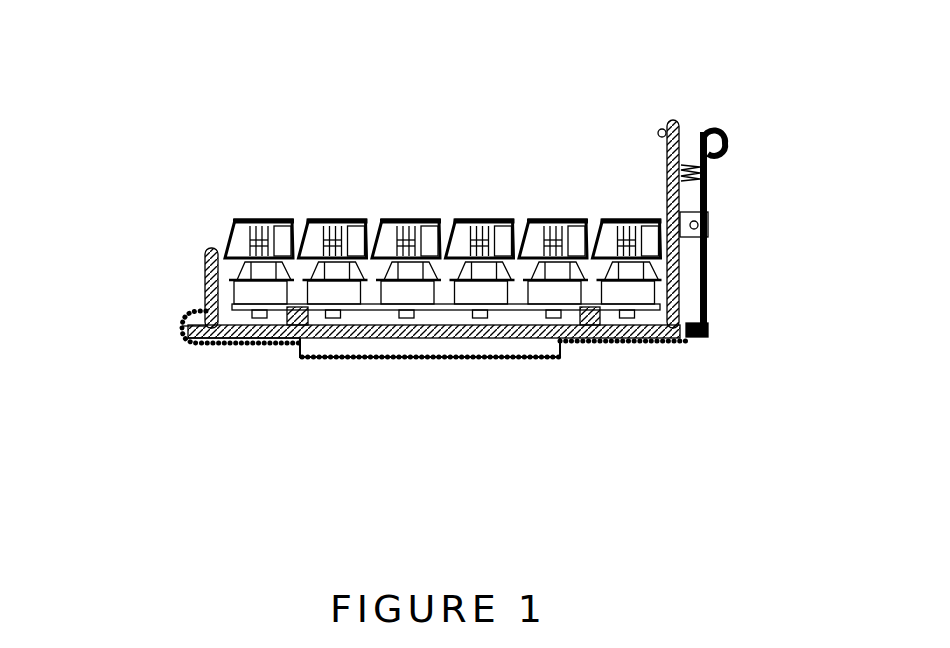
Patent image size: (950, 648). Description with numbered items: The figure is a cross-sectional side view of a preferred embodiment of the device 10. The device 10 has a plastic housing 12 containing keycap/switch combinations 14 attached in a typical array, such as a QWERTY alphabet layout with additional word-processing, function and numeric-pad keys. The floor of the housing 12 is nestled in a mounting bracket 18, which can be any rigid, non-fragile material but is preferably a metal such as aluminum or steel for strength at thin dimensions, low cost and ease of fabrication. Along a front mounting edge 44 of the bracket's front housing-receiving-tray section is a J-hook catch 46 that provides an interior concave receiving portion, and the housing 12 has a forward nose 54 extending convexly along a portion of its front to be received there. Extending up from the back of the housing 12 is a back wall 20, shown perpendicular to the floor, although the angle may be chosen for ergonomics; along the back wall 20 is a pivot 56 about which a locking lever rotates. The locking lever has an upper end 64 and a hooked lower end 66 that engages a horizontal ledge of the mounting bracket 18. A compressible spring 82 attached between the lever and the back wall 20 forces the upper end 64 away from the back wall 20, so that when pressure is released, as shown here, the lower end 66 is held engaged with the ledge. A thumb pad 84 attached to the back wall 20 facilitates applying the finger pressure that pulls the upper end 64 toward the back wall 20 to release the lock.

The device 10 is at (726, 56).
The plastic housing 12 is at (213, 350).
The keycap/switch combinations 14 is at (262, 288).
The mounting bracket 18 is at (623, 340).
The back wall 20 is at (687, 130).
The front mounting edge 44 is at (192, 347).
The J-hook catch 46 is at (188, 315).
The forward nose 54 is at (182, 330).
The pivot 56 is at (706, 216).
The upper end 64 is at (728, 152).
The lower end 66 is at (708, 332).
The compressible spring 82 is at (705, 187).
The thumb pad 84 is at (658, 130).